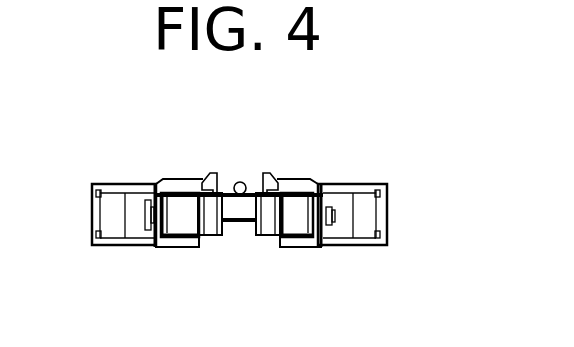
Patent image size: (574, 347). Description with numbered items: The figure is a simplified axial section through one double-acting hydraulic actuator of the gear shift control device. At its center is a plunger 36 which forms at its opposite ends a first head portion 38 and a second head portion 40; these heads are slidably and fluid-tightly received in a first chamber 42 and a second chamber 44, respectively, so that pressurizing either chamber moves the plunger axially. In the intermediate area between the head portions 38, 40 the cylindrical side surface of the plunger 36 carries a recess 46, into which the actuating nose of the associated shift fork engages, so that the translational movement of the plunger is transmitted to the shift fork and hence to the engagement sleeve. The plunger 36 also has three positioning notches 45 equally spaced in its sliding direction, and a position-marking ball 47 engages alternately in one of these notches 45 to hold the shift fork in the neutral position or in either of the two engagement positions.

The plunger 36 is at (267, 225).
The first head portion 38 is at (170, 205).
The second head portion 40 is at (300, 224).
The first chamber 42 is at (136, 230).
The second chamber 44 is at (340, 230).
The positioning notches 45 is at (193, 179).
The recess 46 is at (235, 232).
The position-marking ball 47 is at (237, 183).